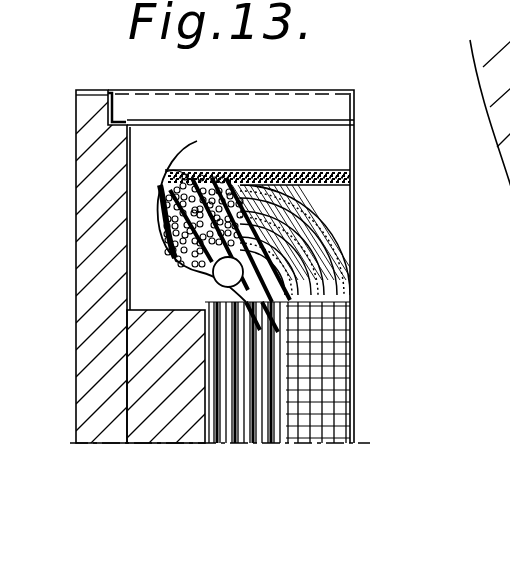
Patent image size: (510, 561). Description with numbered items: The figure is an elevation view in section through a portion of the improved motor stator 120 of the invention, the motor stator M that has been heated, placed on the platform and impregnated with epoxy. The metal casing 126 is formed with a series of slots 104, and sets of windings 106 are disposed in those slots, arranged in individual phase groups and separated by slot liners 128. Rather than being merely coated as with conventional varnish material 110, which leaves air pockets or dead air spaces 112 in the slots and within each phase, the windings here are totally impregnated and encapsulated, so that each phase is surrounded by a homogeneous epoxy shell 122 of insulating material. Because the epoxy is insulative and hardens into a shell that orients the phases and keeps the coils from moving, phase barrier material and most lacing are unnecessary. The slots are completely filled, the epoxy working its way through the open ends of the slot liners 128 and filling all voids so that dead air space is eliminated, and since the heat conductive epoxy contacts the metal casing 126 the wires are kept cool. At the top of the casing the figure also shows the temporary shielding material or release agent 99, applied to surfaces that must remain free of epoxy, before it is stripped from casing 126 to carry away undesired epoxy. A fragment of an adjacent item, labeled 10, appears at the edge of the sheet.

The motor stator M is at (100, 155).
The release agent 99 is at (125, 92).
The varnish material 110 is at (202, 214).
The dead air spaces 112 is at (283, 172).
The epoxy shell 122 is at (310, 172).
The windings 106 is at (200, 300).
The improved motor stator 120 is at (362, 282).
The slots 104 is at (305, 385).
The metal casing 126 is at (157, 423).
The slot liners 128 is at (250, 447).
The adjacent figure element 10 is at (490, 205).